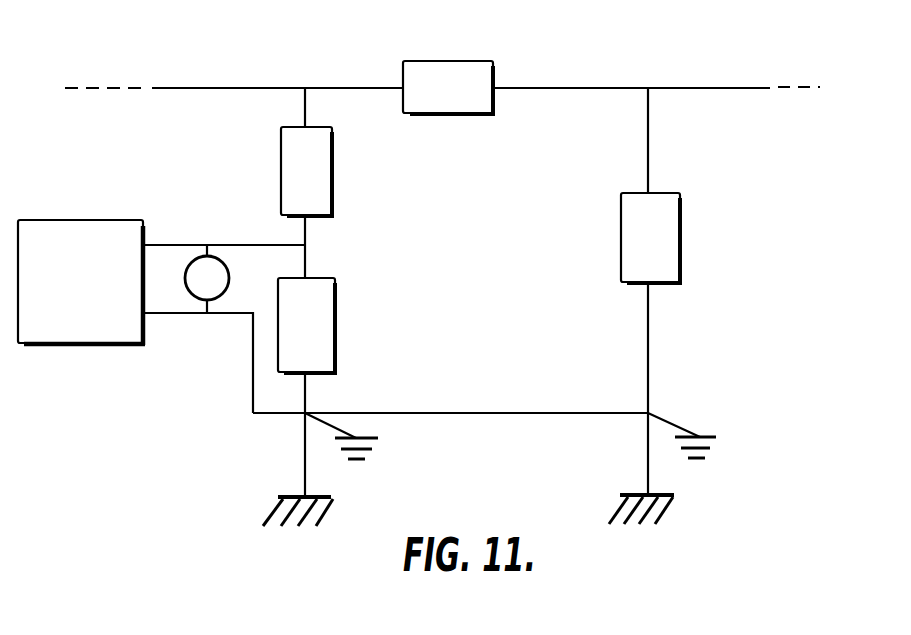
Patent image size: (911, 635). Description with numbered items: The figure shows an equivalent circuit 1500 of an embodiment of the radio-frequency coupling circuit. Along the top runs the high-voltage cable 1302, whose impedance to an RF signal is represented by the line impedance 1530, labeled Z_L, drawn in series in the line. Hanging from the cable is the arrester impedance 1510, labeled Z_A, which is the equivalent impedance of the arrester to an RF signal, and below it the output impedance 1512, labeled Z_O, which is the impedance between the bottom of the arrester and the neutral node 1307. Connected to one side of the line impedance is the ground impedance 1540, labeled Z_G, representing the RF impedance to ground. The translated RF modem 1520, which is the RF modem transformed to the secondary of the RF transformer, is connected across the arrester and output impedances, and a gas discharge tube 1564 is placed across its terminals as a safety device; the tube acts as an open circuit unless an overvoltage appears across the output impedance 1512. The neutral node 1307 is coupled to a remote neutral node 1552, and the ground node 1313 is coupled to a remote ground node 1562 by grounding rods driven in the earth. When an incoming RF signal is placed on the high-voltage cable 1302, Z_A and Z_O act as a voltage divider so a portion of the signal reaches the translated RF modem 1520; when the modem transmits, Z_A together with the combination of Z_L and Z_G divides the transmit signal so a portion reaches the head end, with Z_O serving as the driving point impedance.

The equivalent circuit 1500 is at (152, 35).
The high-voltage cable 1302 is at (278, 88).
The line impedance 1530 is at (447, 60).
The arrester impedance 1510 is at (337, 166).
The output impedance 1512 is at (337, 311).
The ground impedance 1540 is at (681, 223).
The translated RF modem 1520 is at (90, 219).
The gas discharge tube 1564 is at (192, 256).
The neutral node 1307 is at (303, 415).
The ground node 1313 is at (286, 496).
The remote neutral node 1552 is at (645, 417).
The remote ground node 1562 is at (641, 494).